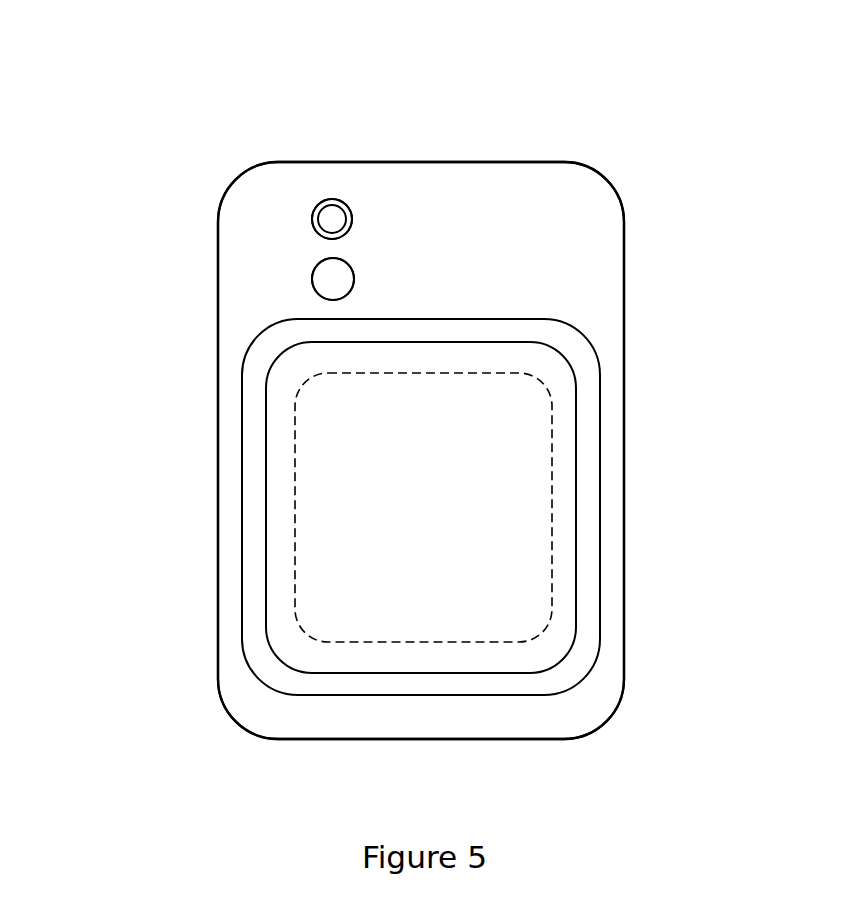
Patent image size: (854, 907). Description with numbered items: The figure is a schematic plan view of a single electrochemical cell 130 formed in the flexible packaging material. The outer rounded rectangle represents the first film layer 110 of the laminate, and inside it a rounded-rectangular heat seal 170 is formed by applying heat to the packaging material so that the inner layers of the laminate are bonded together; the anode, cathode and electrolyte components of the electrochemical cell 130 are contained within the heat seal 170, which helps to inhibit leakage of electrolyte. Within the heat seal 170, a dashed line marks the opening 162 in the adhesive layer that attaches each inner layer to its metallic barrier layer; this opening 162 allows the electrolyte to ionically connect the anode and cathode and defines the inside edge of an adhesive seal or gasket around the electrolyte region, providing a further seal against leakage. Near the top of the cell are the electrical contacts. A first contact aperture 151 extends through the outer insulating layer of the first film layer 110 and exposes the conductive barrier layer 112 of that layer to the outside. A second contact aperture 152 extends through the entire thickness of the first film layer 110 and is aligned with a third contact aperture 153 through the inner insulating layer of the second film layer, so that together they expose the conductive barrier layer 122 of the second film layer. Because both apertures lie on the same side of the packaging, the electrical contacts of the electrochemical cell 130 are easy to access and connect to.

The electrochemical cell 130 is at (218, 121).
The first film layer 110 is at (567, 250).
The second contact aperture 152 is at (314, 206).
The third contact aperture 153 is at (312, 219).
The conductive barrier layer 122 is at (331, 217).
The first contact aperture 151 is at (312, 278).
The conductive barrier layer 112 is at (330, 277).
The heat seal 170 is at (250, 498).
The opening 162 is at (552, 500).